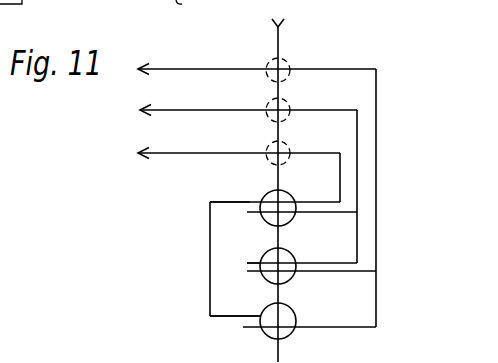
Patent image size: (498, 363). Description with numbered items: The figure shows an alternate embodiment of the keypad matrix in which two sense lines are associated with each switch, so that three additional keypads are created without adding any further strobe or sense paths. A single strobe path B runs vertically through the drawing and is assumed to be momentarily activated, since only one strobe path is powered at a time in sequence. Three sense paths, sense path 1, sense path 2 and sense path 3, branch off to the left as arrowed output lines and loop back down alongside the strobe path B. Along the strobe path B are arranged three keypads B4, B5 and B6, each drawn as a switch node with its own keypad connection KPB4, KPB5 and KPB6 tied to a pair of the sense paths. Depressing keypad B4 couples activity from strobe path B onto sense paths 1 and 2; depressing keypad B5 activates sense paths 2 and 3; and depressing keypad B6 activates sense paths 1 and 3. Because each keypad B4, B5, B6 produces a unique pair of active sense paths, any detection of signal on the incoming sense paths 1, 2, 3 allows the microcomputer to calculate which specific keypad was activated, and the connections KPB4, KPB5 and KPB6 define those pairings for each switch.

The strobe path B is at (278, 181).
The sense path # 1 is at (226, 231).
The sense path # 2 is at (234, 182).
The sense path # 3 is at (243, 206).
The keypad B4 is at (264, 220).
The keypad B5 is at (262, 278).
The keypad B6 is at (262, 333).
The keying path KP B4 KPB4 is at (223, 188).
The keying path KP B5 KPB5 is at (238, 248).
The keying path KP B6 KPB6 is at (235, 304).